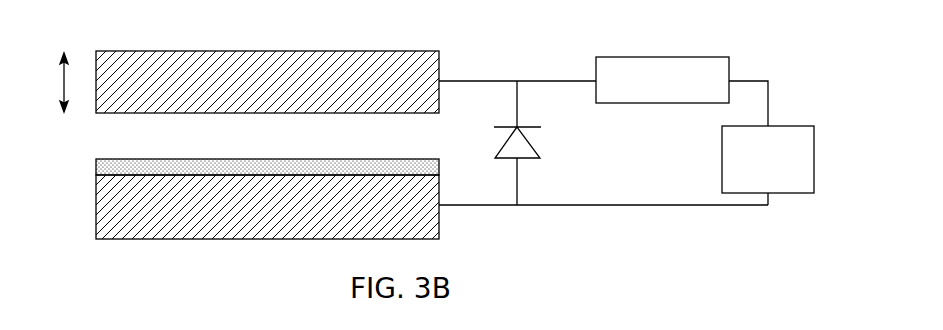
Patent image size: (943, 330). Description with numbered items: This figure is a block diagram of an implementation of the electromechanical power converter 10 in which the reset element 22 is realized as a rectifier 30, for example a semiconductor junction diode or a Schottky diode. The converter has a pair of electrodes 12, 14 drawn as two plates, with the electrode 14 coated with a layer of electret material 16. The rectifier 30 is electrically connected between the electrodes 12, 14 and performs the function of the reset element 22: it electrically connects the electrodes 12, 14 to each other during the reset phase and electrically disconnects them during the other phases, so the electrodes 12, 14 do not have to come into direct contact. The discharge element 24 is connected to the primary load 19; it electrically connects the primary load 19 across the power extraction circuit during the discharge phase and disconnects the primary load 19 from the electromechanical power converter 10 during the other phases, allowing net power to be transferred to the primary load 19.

The electromechanical power converter 10 is at (77, 32).
The electrode 12 is at (441, 57).
The electrode 14 is at (441, 229).
The layer of electret material 16 is at (95, 160).
The primary load 19 is at (720, 160).
The reset element 22 is at (549, 163).
The discharge element 24 is at (662, 106).
The rectifier 30 is at (537, 147).